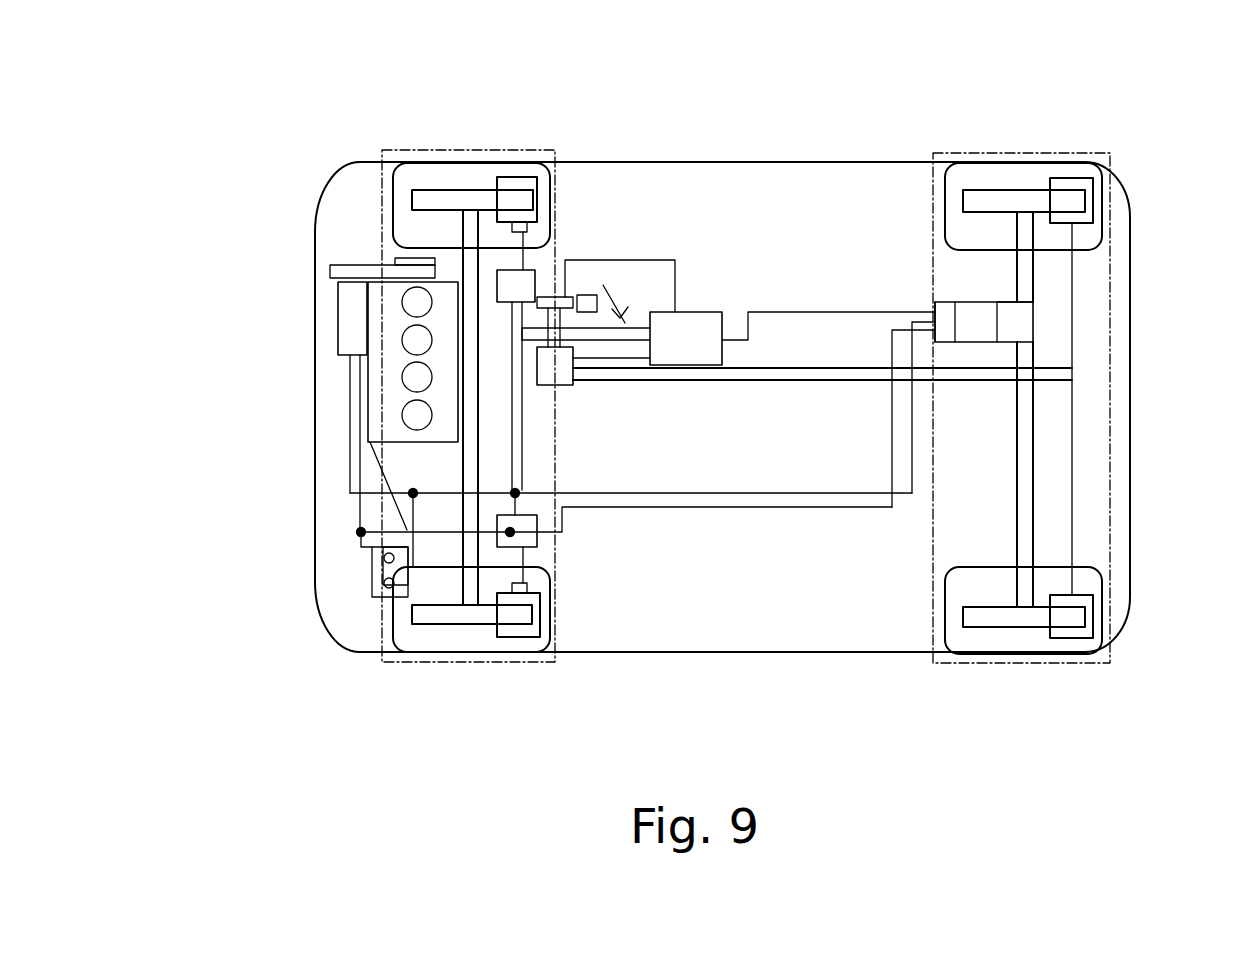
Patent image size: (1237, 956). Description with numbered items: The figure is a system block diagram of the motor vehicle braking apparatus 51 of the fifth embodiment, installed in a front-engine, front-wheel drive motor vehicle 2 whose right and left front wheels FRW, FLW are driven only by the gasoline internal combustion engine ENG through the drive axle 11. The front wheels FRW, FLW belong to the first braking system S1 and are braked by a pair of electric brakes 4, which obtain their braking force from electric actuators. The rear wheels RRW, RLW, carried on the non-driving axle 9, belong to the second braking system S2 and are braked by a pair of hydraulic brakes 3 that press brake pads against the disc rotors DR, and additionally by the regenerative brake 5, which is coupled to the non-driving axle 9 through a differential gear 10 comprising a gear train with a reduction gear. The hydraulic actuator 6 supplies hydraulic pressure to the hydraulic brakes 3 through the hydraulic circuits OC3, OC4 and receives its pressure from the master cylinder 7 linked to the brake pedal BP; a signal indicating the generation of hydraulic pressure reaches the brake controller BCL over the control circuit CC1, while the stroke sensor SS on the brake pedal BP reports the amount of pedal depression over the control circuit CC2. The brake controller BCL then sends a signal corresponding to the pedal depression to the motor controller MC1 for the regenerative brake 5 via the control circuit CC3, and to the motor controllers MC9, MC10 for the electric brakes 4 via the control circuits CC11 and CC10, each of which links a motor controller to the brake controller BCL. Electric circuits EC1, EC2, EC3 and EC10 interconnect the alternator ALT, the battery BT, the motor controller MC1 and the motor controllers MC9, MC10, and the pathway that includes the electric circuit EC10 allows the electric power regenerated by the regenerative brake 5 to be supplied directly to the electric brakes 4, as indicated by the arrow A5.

The motor vehicle braking apparatus 51 is at (692, 195).
The motor vehicle 2 is at (745, 657).
The hydraulic brakes 3 is at (1085, 185).
The electric brakes 4 is at (518, 183).
The regenerative brake 5 is at (975, 300).
The hydraulic actuator 6 is at (552, 380).
The master cylinder 7 is at (565, 296).
The non-driving axle 9 is at (1017, 470).
The differential gear 10 is at (1008, 300).
The drive axle 11 is at (538, 275).
The arrow A5 is at (566, 482).
The first braking system S1 is at (490, 667).
The second braking system S2 is at (955, 663).
The right front wheel FRW is at (392, 183).
The left front wheel FLW is at (423, 647).
The right rear wheel RRW is at (1020, 175).
The left rear wheel RLW is at (1033, 650).
The disc rotors DR is at (423, 200).
The motor controller MC9 is at (507, 285).
The motor controller MC10 is at (530, 545).
The motor controller MC1 is at (950, 343).
The alternator ALT is at (345, 315).
The gasoline internal combustion engine ENG is at (393, 388).
The battery BT is at (372, 575).
The brake pedal BP is at (622, 315).
The stroke sensor SS is at (587, 312).
The brake controller BCL is at (702, 357).
The control circuit CC1 is at (590, 362).
The control circuit CC2 is at (645, 260).
The control circuit CC3 is at (848, 310).
The control circuit CC10 is at (520, 372).
The control circuit CC11 is at (637, 330).
The electric circuit EC1 is at (450, 448).
The electric circuit EC2 is at (715, 493).
The electric circuit EC3 is at (892, 445).
The electric circuit EC10 is at (352, 490).
The hydraulic circuit OC3 is at (1072, 330).
The hydraulic circuit OC4 is at (1072, 475).